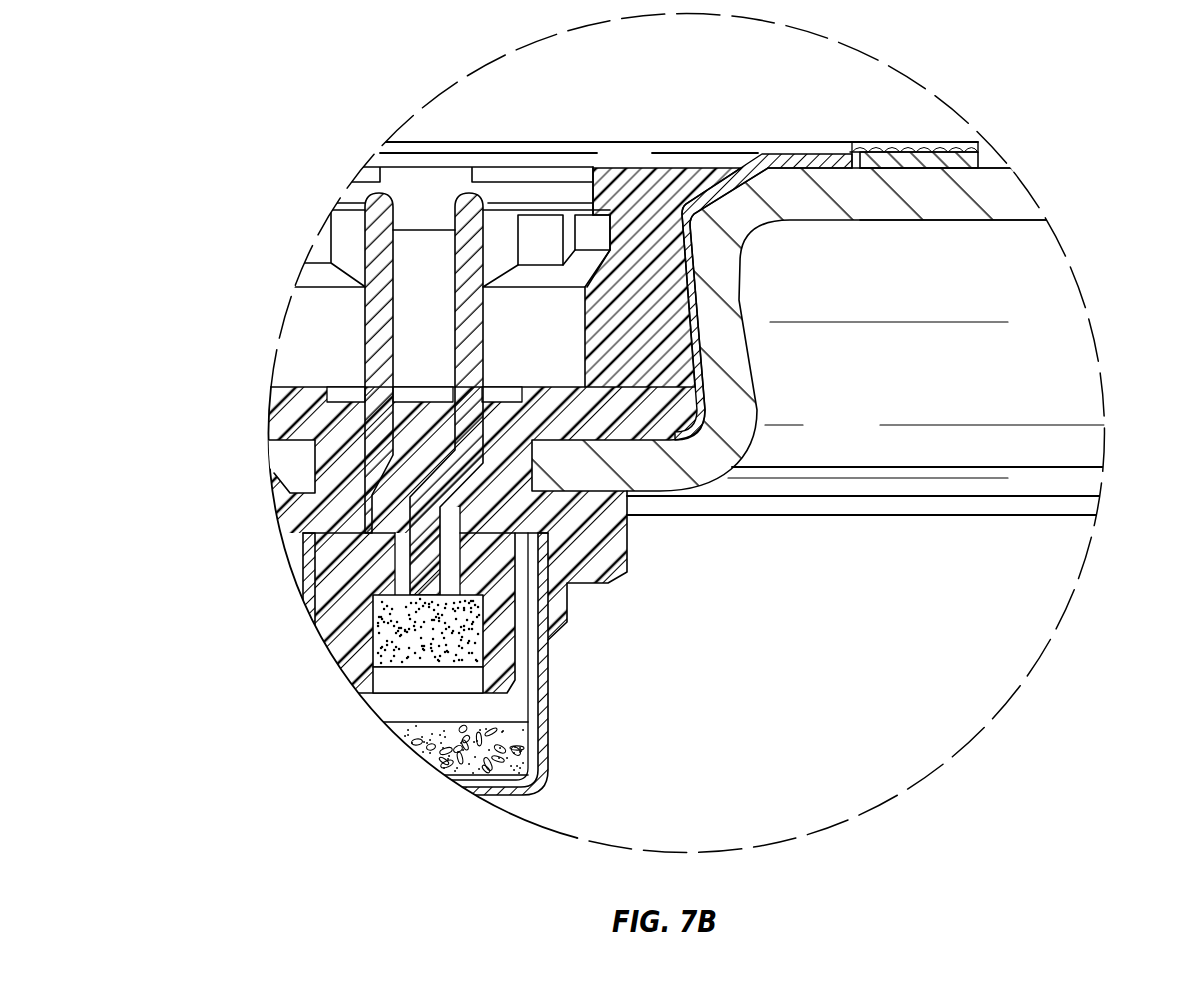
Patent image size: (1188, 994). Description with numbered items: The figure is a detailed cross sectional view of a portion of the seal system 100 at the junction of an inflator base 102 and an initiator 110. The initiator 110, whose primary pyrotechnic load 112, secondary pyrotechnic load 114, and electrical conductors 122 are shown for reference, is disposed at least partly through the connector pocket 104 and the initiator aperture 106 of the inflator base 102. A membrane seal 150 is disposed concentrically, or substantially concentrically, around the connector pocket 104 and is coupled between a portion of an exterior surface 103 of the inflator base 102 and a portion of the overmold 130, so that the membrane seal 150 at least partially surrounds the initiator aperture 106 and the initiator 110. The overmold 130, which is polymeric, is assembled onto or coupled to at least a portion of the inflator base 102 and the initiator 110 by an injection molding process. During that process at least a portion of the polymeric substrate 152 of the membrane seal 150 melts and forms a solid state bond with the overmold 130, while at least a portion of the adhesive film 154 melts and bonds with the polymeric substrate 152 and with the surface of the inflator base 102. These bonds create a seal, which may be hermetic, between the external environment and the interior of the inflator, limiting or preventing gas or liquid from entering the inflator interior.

The seal system 100 is at (250, 147).
The inflator base 102 is at (870, 195).
The exterior surface 103 is at (932, 180).
The connector pocket 104 is at (512, 112).
The initiator aperture 106 is at (287, 523).
The initiator 110 is at (547, 753).
The primary pyrotechnic load 112 is at (450, 633).
The secondary pyrotechnic load 114 is at (488, 793).
The electrical conductors 122 is at (452, 218).
The overmold 130 is at (645, 168).
The membrane seal 150 is at (757, 142).
The polymeric substrate 152 is at (910, 138).
The adhesive film 154 is at (975, 158).